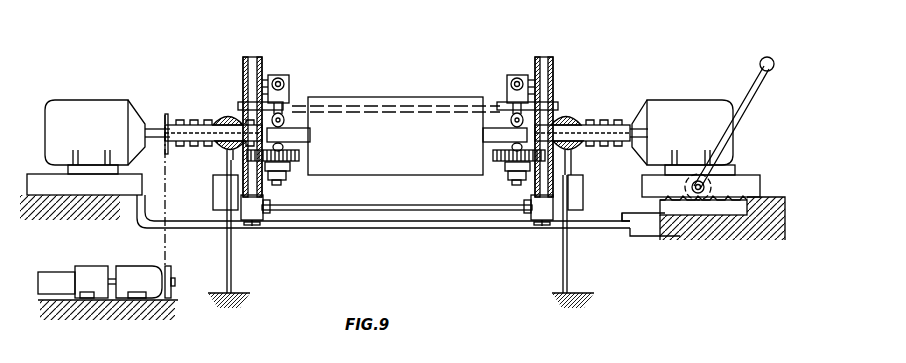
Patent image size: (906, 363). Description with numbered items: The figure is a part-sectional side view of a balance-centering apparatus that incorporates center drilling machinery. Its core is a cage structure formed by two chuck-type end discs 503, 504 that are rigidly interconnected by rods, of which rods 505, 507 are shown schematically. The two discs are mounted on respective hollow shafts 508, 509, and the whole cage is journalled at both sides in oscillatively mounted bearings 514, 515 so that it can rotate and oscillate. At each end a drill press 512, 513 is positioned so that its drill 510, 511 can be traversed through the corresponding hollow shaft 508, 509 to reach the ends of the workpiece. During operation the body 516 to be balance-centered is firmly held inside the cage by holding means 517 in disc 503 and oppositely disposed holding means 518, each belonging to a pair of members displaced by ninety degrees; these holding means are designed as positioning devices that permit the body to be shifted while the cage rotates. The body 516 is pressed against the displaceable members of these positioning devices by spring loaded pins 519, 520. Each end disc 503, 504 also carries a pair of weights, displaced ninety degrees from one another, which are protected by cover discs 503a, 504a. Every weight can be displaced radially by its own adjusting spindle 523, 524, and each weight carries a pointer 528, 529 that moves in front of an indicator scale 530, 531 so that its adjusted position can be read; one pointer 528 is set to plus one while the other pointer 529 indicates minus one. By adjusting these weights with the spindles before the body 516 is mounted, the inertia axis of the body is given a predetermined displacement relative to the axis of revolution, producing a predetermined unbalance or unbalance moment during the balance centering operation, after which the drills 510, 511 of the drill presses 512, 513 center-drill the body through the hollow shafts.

The chuck-type end disc 503 is at (261, 56).
The cover disc 503a is at (246, 56).
The chuck-type end disc 504 is at (538, 56).
The cover disc 504a is at (550, 56).
The rod 505 is at (438, 109).
The rod 507 is at (378, 195).
The hollow shaft 508 is at (175, 123).
The hollow shaft 509 is at (628, 125).
The drill 510 is at (155, 128).
The drill 511 is at (635, 128).
The drill press 512 is at (95, 100).
The drill press 513 is at (710, 100).
The oscillatively mounted bearing 514 is at (222, 113).
The oscillatively mounted bearing 515 is at (562, 115).
The body 516 is at (390, 110).
The holding means 517 is at (285, 183).
The holding means 518 is at (512, 184).
The spring loaded pin 519 is at (283, 116).
The spring loaded pin 520 is at (512, 125).
The adjusting spindle 523 is at (250, 227).
The adjusting spindle 524 is at (553, 222).
The pointer 528 is at (240, 200).
The pointer 529 is at (560, 200).
The indicator scale 530 is at (224, 178).
The indicator scale 531 is at (584, 182).